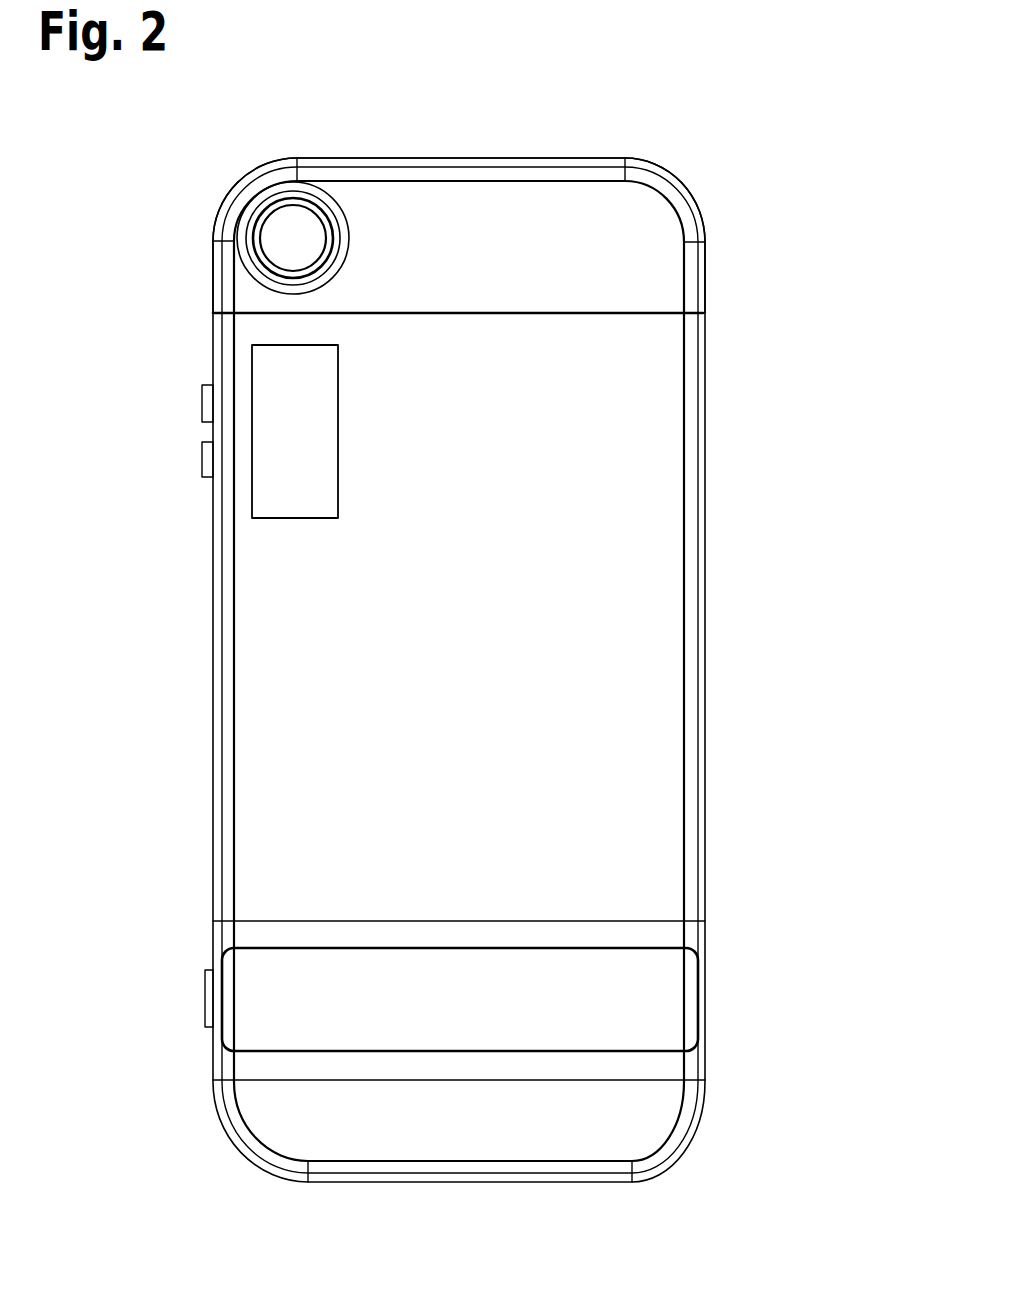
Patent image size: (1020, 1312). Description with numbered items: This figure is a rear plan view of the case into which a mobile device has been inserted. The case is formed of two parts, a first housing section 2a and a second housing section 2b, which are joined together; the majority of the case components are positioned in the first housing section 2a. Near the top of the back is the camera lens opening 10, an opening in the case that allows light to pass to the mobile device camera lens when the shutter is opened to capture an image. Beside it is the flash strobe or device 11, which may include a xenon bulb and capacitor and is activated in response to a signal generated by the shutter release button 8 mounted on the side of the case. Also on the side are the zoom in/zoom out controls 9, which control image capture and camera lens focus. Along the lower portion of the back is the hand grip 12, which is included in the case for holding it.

The first housing section 2a is at (663, 512).
The second housing section 2b is at (632, 233).
The shutter release button 8 is at (202, 997).
The zoom in/zoom out controls 9 is at (205, 458).
The camera lens opening 10 is at (293, 245).
The flash strobe or device 11 is at (285, 482).
The hand grip 12 is at (600, 1025).